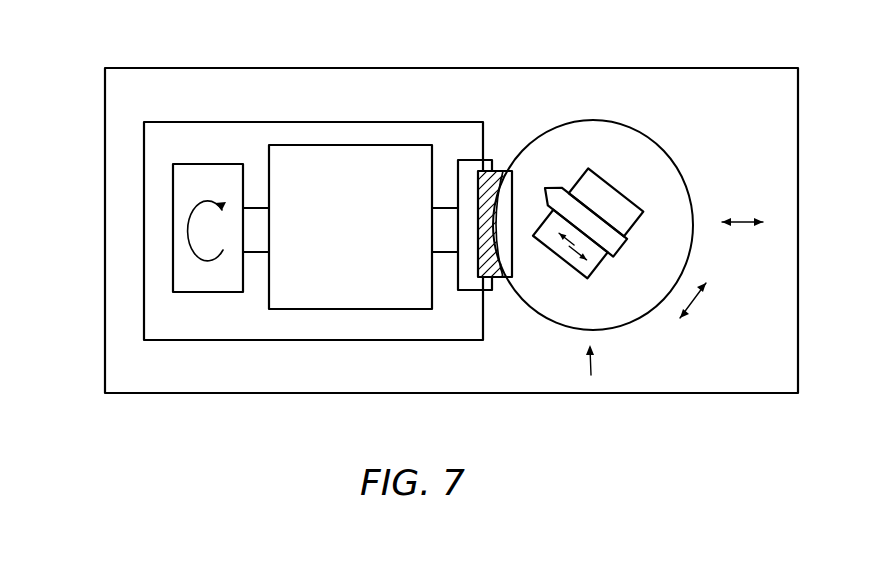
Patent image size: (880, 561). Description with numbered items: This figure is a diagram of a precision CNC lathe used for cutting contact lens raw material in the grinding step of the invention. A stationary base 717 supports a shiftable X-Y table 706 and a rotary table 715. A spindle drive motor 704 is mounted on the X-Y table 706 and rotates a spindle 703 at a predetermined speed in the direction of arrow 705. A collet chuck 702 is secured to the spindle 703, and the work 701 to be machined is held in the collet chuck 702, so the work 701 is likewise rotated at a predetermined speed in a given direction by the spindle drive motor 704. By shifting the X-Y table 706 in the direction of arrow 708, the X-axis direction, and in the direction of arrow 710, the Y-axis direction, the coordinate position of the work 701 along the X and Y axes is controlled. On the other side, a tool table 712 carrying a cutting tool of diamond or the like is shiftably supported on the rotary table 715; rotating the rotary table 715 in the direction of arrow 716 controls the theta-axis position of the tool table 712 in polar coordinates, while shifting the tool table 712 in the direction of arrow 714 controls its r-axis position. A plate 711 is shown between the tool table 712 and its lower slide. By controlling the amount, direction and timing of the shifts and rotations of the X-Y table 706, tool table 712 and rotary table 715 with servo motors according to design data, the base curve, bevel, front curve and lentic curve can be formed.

The work 701 is at (484, 276).
The collet chuck 702 is at (468, 167).
The spindle 703 is at (337, 160).
The spindle drive motor 704 is at (208, 288).
The arrow 705 is at (194, 237).
The X-Y table 706 is at (191, 135).
The arrow 708 is at (594, 356).
The arrow 710 is at (742, 223).
The plate 711 is at (615, 255).
The tool table 712 is at (597, 187).
The arrow 714 is at (572, 250).
The rotary table 715 is at (655, 157).
The arrow 716 is at (693, 303).
The stationary base 717 is at (334, 377).